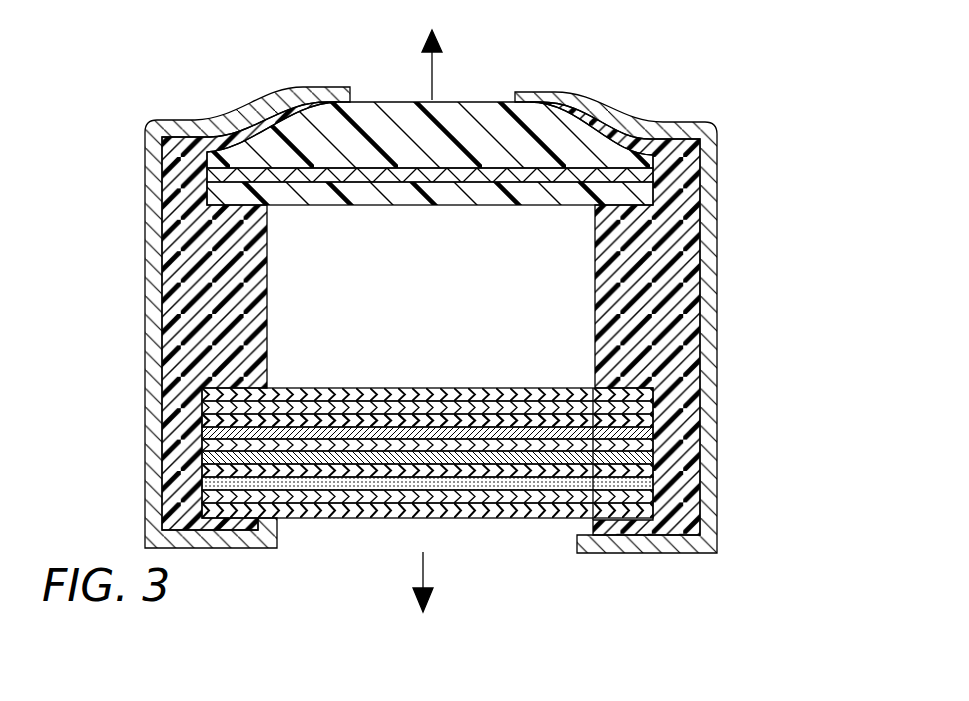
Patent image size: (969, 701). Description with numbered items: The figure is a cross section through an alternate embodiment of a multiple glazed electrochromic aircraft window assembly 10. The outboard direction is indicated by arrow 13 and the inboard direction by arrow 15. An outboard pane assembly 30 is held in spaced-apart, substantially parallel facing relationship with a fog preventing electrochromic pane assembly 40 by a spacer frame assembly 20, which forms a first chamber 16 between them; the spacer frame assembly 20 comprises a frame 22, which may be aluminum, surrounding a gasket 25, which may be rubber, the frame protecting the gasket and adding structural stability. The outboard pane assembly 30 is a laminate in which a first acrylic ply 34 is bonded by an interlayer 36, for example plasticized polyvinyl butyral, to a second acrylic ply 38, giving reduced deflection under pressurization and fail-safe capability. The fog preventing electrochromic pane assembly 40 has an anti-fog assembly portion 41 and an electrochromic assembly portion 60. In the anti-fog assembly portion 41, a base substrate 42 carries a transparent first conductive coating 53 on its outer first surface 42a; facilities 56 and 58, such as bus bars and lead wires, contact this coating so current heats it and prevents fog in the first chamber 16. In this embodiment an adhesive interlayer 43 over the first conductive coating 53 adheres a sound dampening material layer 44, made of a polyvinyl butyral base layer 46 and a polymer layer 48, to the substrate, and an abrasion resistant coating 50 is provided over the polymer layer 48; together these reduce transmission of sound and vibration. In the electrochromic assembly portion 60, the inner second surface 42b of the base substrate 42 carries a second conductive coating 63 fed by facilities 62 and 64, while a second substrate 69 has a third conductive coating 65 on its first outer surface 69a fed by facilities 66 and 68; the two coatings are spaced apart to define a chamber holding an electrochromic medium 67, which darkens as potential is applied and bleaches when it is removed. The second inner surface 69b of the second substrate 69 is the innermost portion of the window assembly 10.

The electrochromic aircraft window assembly 10 is at (750, 116).
The arrow 13 is at (430, 66).
The arrow 15 is at (423, 580).
The first chamber 16 is at (435, 276).
The spacer frame assembly 20 is at (202, 80).
The frame 22 is at (145, 207).
The gasket 25 is at (162, 268).
The outboard pane assembly 30 is at (472, 76).
The first acrylic ply 34 is at (635, 163).
The interlayer 36 is at (643, 178).
The second acrylic ply 38 is at (697, 224).
The fog preventing electrochromic pane assembly 40 is at (494, 343).
The anti-fog assembly portion 41 is at (78, 385).
The base substrate 42 is at (205, 510).
The outer first surface 42a is at (308, 470).
The inner second surface 42b is at (303, 490).
The adhesive interlayer 43 is at (205, 420).
The sound dampening material layer 44 is at (700, 407).
The polyvinyl butyral base layer 46 is at (205, 407).
The polymer layer 48 is at (205, 392).
The abrasion resistant coating 50 is at (202, 388).
The first conductive coating 53 is at (205, 433).
The facility 56 is at (268, 440).
The facility 58 is at (593, 430).
The electrochromic assembly portion 60 is at (715, 472).
The facility 62 is at (657, 445).
The second conductive coating 63 is at (657, 481).
The facility 64 is at (175, 530).
The third conductive coating 65 is at (345, 470).
The facility 66 is at (660, 535).
The electrochromic medium 67 is at (548, 498).
The facility 68 is at (230, 547).
The second substrate 69 is at (497, 500).
The first outer surface 69a is at (530, 495).
The second inner surface 69b is at (455, 518).